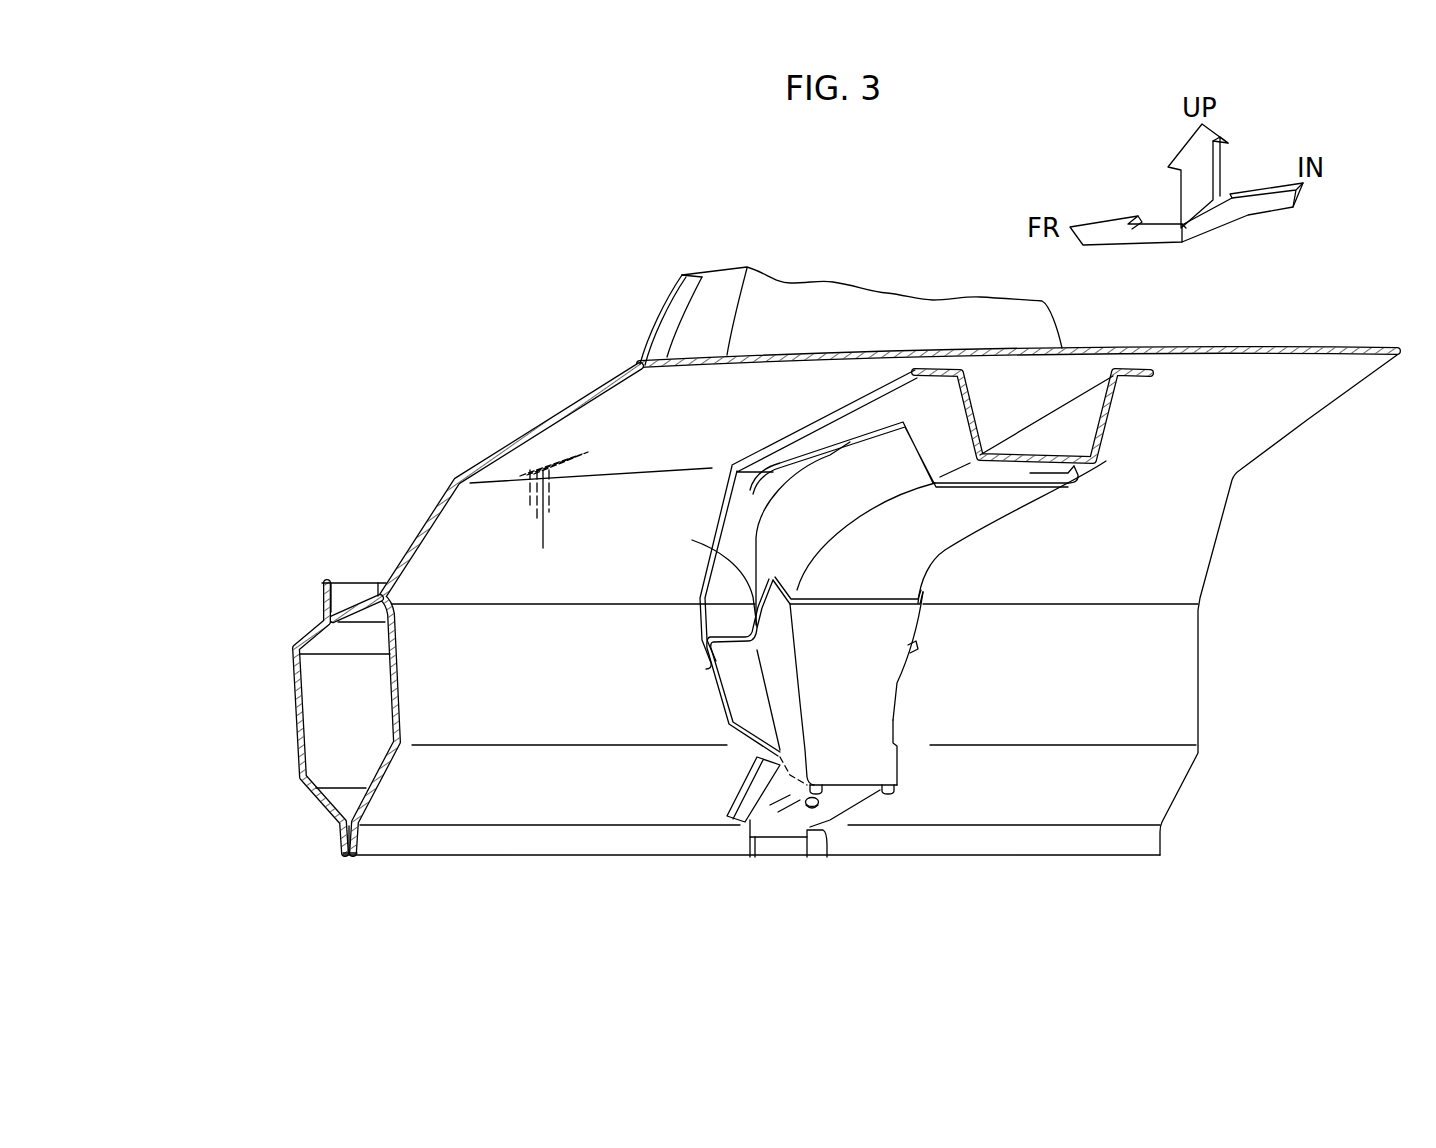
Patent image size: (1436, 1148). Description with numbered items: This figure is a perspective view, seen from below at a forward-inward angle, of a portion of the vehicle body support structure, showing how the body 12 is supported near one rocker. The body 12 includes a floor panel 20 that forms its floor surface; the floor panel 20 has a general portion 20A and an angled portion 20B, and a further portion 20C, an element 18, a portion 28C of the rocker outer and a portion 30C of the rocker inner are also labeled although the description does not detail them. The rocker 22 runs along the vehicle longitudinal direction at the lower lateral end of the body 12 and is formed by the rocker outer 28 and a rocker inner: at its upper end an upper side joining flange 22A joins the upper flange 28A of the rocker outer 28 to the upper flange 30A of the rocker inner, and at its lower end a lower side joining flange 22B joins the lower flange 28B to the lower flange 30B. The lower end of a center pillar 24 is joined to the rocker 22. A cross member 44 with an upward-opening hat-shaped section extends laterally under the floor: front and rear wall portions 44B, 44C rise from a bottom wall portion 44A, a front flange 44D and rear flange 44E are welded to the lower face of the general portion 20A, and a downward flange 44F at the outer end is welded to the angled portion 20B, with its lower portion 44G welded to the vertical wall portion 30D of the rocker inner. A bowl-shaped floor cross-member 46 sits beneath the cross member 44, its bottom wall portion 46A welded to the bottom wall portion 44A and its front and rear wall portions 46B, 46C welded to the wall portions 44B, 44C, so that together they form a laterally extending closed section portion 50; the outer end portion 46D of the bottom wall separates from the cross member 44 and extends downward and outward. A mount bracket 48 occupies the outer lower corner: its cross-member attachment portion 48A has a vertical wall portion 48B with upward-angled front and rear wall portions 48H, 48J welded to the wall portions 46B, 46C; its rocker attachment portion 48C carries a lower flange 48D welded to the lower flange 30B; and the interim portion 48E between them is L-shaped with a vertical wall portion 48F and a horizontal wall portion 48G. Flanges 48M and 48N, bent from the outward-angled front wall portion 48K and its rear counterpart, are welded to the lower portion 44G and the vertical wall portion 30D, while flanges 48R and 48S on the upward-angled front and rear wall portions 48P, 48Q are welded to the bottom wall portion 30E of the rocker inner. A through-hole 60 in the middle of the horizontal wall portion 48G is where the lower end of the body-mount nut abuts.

The body 12 is at (441, 419).
The roof panel 18 is at (1146, 317).
The floor panel 20 is at (598, 382).
The general portion of the floor panel 20A is at (637, 457).
The angled portion of the floor panel 20B is at (518, 587).
The side outer panel flange 20C is at (368, 600).
The rocker 22 is at (272, 668).
The upper side joining flange 22A is at (327, 567).
The lower side joining flange 22B is at (352, 863).
The center pillar 24 is at (662, 300).
The rocker outer 28 is at (297, 750).
The upper flange of the rocker outer 28A is at (322, 598).
The lower flange of the rocker outer 28B is at (340, 833).
The inner panel side wall 28C is at (313, 702).
The upper flange of the rocker inner 30A is at (343, 597).
The lower flange of the rocker inner 30B is at (508, 845).
The outer panel corner portion 30C is at (373, 620).
The vertical wall portion of the rocker inner 30D is at (550, 727).
The bottom wall portion of the rocker inner 30E is at (593, 812).
The cross member 44 is at (1115, 418).
The bottom wall portion of the cross member 44A is at (1040, 478).
The front wall portion of the cross member 44B is at (935, 445).
The rear wall portion of the cross member 44C is at (1066, 412).
The front flange 44D is at (870, 402).
The rear flange 44E is at (1130, 383).
The flange 44F is at (700, 578).
The lower portion of the flange 44G is at (710, 640).
The floor cross-member 46 is at (940, 553).
The bottom wall portion of the floor cross-member 46A is at (977, 515).
The front wall portion of the floor cross-member 46B is at (863, 488).
The rear wall portion of the floor cross-member 46C is at (1085, 484).
The vehicle lateral direction outer side end portion 46D is at (837, 577).
The mount bracket 48 is at (900, 680).
The cross-member attachment portion 48A is at (925, 622).
The vertical wall portion of the cross-member attachment portion 48B is at (857, 605).
The rocker attachment portion 48C is at (718, 837).
The lower flange 48D is at (780, 850).
The interim portion 48E is at (900, 745).
The vertical wall portion of the interim portion 48F is at (877, 705).
The horizontal wall portion of the interim portion 48G is at (852, 797).
The front wall portion 48H is at (718, 578).
The rear wall portion 48J is at (930, 583).
The front wall portion 48K is at (777, 703).
The flange 48M is at (737, 688).
The flange 48N is at (912, 650).
The front wall portion 48P is at (745, 857).
The rear wall portion 48Q is at (897, 767).
The flange 48R is at (743, 798).
The flange 48S is at (830, 852).
The vehicle lateral direction closed section portion 50 is at (1022, 414).
The through-hole 60 is at (833, 790).